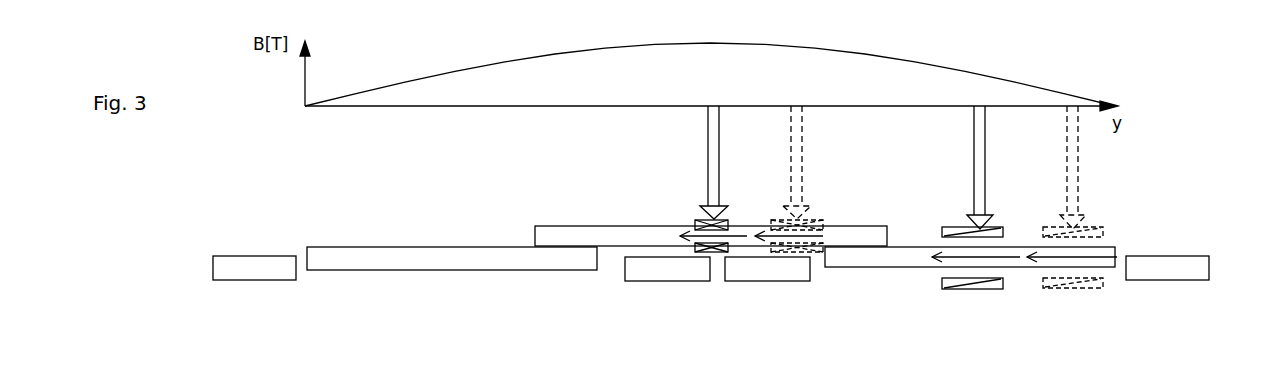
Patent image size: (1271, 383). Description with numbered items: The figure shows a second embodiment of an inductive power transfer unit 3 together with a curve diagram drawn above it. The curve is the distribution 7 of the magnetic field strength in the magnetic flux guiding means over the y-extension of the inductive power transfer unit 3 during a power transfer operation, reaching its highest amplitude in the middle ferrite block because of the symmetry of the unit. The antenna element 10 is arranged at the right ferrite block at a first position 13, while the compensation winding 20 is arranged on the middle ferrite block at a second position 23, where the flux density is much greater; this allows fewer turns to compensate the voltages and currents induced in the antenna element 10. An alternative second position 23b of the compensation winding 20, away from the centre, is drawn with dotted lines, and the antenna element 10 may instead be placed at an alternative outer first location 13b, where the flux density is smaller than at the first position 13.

The secondary unit 3 is at (278, 204).
The distribution 7 is at (468, 70).
The antenna element 10 is at (950, 283).
The first position 13 is at (980, 103).
The alternative outer first location 13b is at (1075, 103).
The compensation winding 20 is at (710, 220).
The second position 23 is at (715, 103).
The alternative second position 23b is at (797, 103).